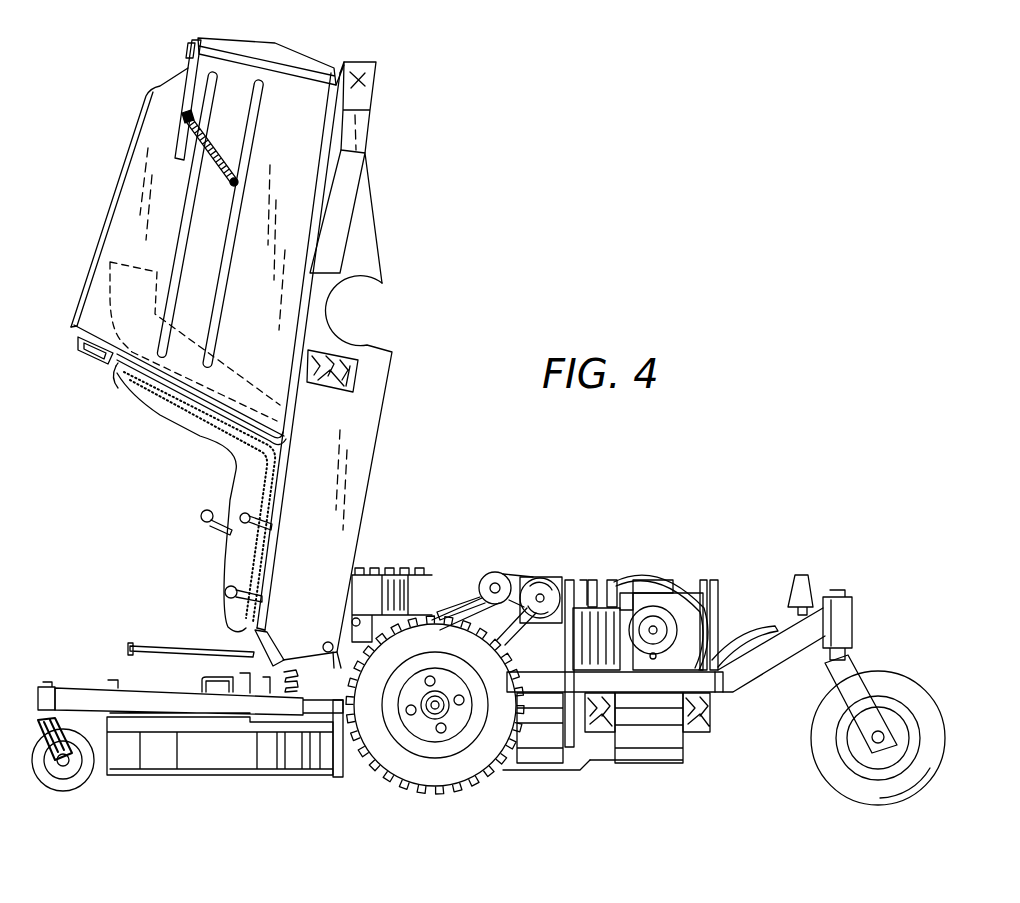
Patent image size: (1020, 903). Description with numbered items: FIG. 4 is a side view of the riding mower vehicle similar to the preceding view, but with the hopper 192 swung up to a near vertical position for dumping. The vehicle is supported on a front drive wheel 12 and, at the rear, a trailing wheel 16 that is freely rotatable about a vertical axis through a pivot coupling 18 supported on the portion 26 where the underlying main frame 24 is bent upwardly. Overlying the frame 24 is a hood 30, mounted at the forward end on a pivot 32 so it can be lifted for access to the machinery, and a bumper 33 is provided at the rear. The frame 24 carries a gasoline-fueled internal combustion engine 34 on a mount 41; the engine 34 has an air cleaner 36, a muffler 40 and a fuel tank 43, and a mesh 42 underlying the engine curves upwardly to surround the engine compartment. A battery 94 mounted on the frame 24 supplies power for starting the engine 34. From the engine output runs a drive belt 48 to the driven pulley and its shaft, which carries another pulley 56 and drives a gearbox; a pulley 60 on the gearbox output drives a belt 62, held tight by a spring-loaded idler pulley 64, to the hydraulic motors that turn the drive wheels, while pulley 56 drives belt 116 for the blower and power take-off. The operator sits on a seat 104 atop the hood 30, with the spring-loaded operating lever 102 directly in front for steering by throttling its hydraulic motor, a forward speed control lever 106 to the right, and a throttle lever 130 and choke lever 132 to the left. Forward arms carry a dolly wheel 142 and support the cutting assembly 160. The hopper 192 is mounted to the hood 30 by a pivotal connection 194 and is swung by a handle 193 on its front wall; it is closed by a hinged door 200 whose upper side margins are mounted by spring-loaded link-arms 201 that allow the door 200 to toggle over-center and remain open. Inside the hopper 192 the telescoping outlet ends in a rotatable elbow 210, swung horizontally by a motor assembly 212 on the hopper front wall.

The drive wheel 12 is at (488, 778).
The trailing wheel 16 is at (812, 742).
The pivot coupling 18 is at (853, 608).
The main frame 24 is at (719, 686).
The upwardly bent frame portion 26 is at (763, 660).
The hood 30 is at (390, 411).
The pivot 32 is at (327, 641).
The bumper 33 is at (370, 66).
The internal combustion engine 34 is at (704, 583).
The air cleaner 36 is at (688, 600).
The muffler 40 is at (614, 581).
The mount 41 is at (668, 766).
The mesh 42 is at (773, 628).
The fuel tank 43 is at (723, 603).
The drive belt 48 is at (594, 578).
The pulley 56 is at (571, 580).
The pulley 60 is at (553, 580).
The belt 62 is at (519, 584).
The spring-loaded idler pulley 64 is at (497, 572).
The battery 94 is at (432, 574).
The operating lever 102 is at (128, 648).
The seat 104 is at (168, 418).
The forward speed control lever 106 is at (201, 516).
The belt 116 is at (571, 754).
The throttle lever 130 is at (228, 589).
The choke lever 132 is at (243, 513).
The dolly wheel 142 is at (84, 778).
The cutting assembly 160 is at (292, 786).
The hopper 192 is at (138, 112).
The handle 193 is at (72, 330).
The pivotal connection 194 is at (342, 68).
The hinged door 200 is at (277, 41).
The spring-loaded link-arm 201 is at (190, 68).
The elbow 210 is at (118, 388).
The motor assembly 212 is at (90, 362).